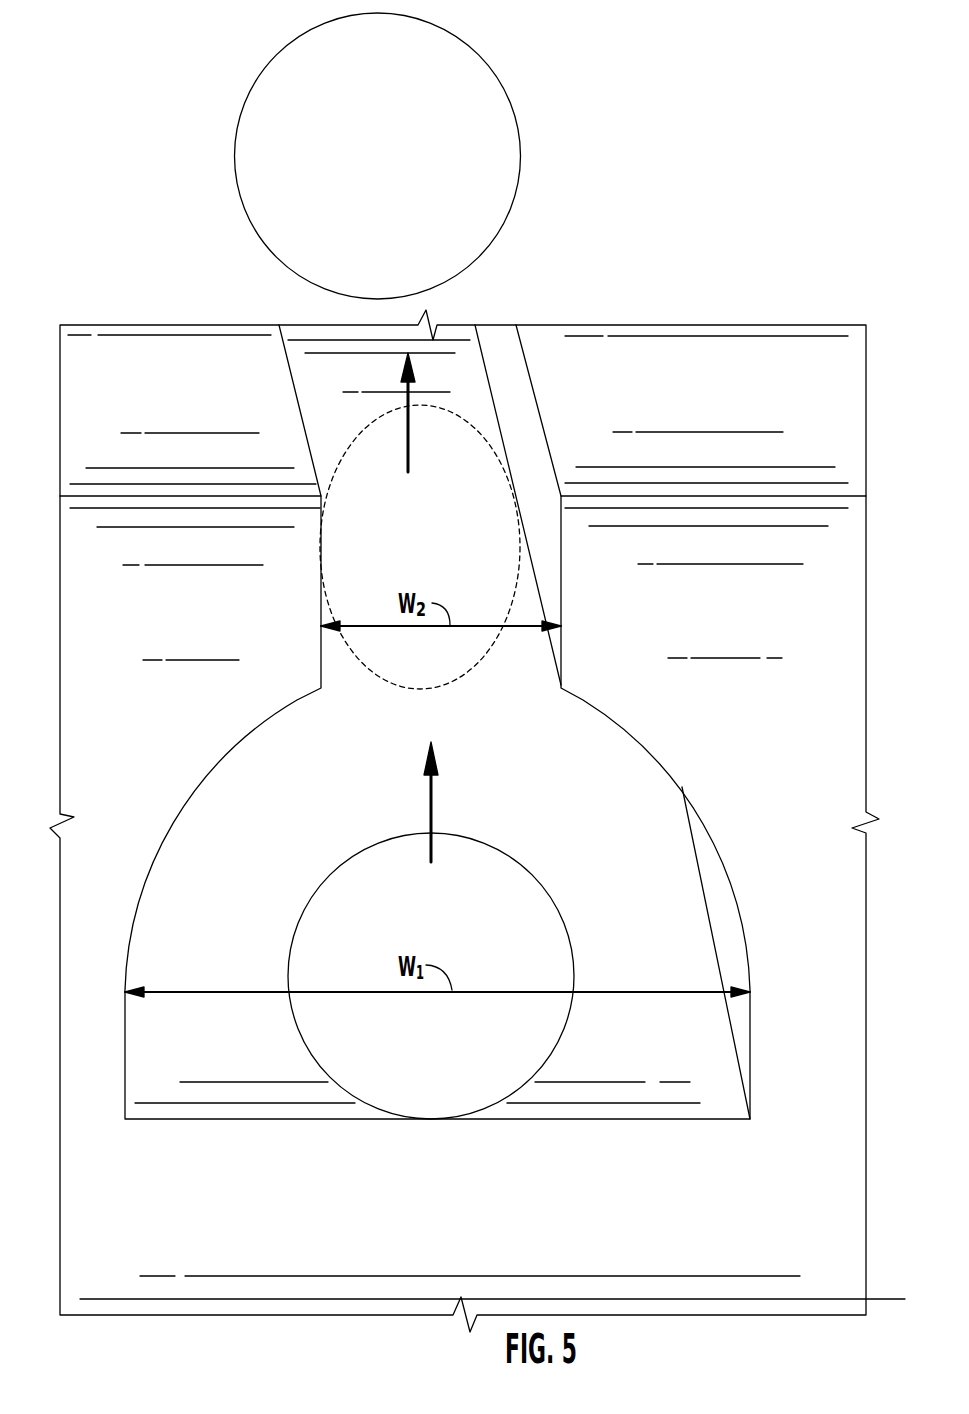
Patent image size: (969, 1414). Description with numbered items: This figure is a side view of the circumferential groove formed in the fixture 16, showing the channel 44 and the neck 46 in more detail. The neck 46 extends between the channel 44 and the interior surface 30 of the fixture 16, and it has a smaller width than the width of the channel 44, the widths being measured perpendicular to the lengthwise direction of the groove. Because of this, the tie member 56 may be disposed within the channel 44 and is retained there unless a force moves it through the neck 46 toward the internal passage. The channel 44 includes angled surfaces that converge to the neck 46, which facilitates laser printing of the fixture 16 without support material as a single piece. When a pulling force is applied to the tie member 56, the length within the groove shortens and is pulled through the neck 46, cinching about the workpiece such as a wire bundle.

The fixture 16 is at (835, 722).
The interior surface 30 is at (224, 325).
The channel 44 is at (732, 1025).
The neck 46 is at (500, 463).
The tie member 56 is at (495, 183).